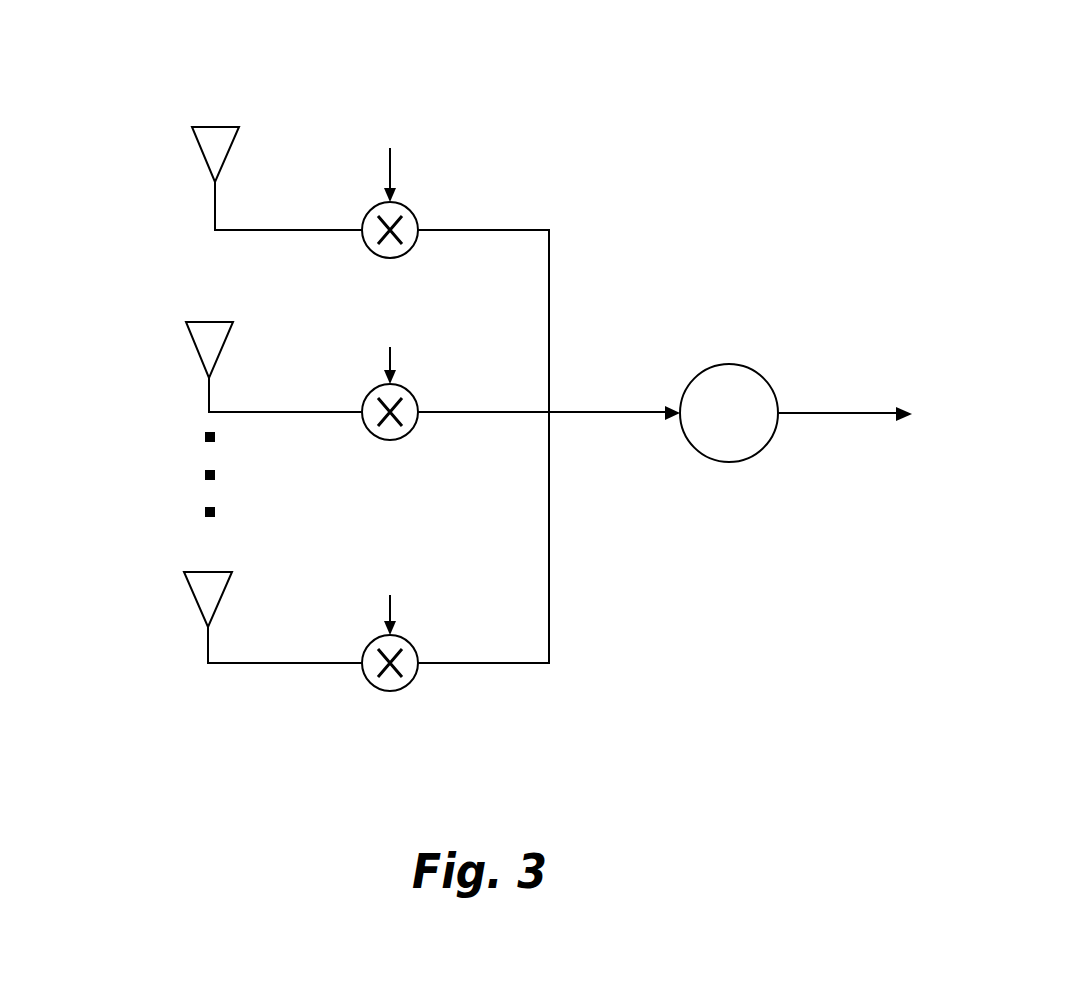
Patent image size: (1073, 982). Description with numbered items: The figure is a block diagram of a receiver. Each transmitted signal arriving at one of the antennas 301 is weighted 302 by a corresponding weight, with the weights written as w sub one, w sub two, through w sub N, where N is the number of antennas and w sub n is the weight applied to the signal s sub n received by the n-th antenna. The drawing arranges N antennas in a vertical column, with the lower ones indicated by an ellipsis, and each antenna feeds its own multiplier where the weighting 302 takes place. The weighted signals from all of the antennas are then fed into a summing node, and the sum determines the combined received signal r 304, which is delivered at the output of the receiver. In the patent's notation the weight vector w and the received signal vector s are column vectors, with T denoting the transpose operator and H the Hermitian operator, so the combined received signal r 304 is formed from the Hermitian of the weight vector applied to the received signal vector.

The antennas 301 is at (203, 112).
The weighting 302 is at (408, 143).
The combined received signal r 304 is at (885, 415).